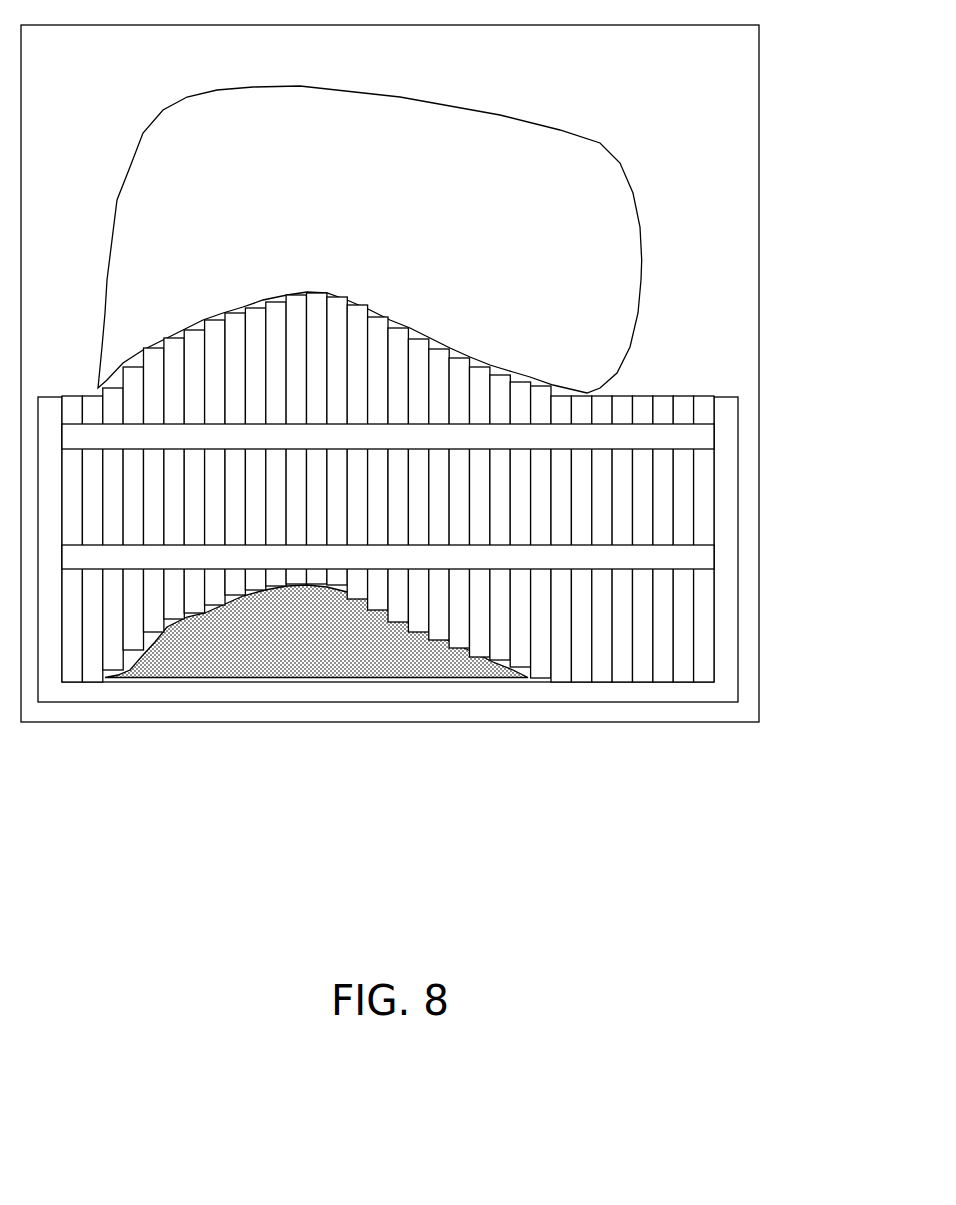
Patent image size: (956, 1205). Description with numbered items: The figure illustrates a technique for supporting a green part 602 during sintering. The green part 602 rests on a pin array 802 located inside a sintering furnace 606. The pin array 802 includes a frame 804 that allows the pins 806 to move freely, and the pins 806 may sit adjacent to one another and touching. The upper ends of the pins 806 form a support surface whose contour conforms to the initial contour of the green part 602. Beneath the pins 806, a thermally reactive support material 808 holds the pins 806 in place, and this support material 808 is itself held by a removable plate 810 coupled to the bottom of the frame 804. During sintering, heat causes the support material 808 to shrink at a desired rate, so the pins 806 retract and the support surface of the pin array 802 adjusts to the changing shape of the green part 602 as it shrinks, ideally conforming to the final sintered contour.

The green part 602 is at (410, 210).
The sintering furnace 606 is at (759, 142).
The pin array 802 is at (442, 548).
The frame 804 is at (706, 558).
The pins 806 is at (647, 670).
The thermally reactive support material 808 is at (205, 653).
The removable plate 810 is at (353, 692).